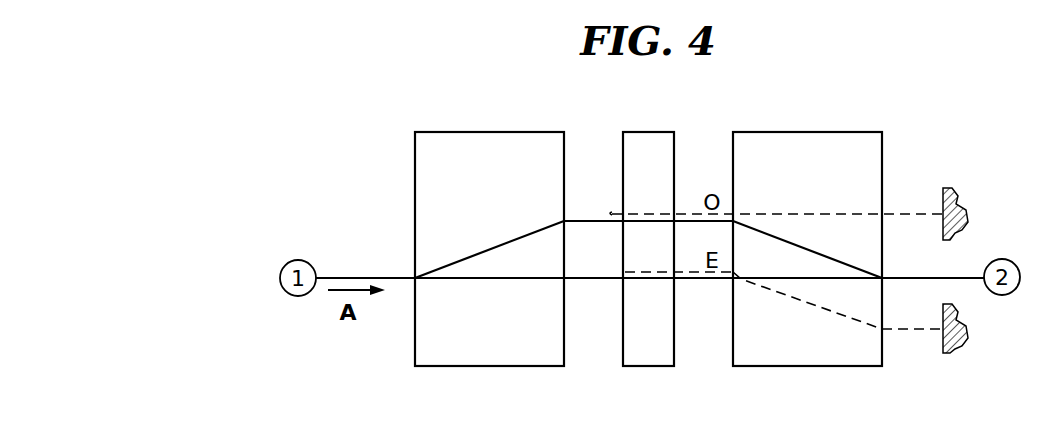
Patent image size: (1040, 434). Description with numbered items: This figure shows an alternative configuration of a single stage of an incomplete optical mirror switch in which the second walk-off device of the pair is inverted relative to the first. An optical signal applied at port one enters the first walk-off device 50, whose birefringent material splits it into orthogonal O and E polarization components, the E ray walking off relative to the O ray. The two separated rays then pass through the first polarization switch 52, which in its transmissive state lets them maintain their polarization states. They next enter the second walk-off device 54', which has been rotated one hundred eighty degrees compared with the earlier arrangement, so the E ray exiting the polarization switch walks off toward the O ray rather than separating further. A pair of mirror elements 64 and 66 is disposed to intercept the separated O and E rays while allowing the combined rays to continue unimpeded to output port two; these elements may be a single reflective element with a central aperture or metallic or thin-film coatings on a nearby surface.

The first walk-off device 50 is at (453, 132).
The first polarization switch 52 is at (620, 163).
The second walk-off device 54' is at (807, 229).
The mirror element 64 is at (955, 193).
The mirror element 66 is at (955, 347).